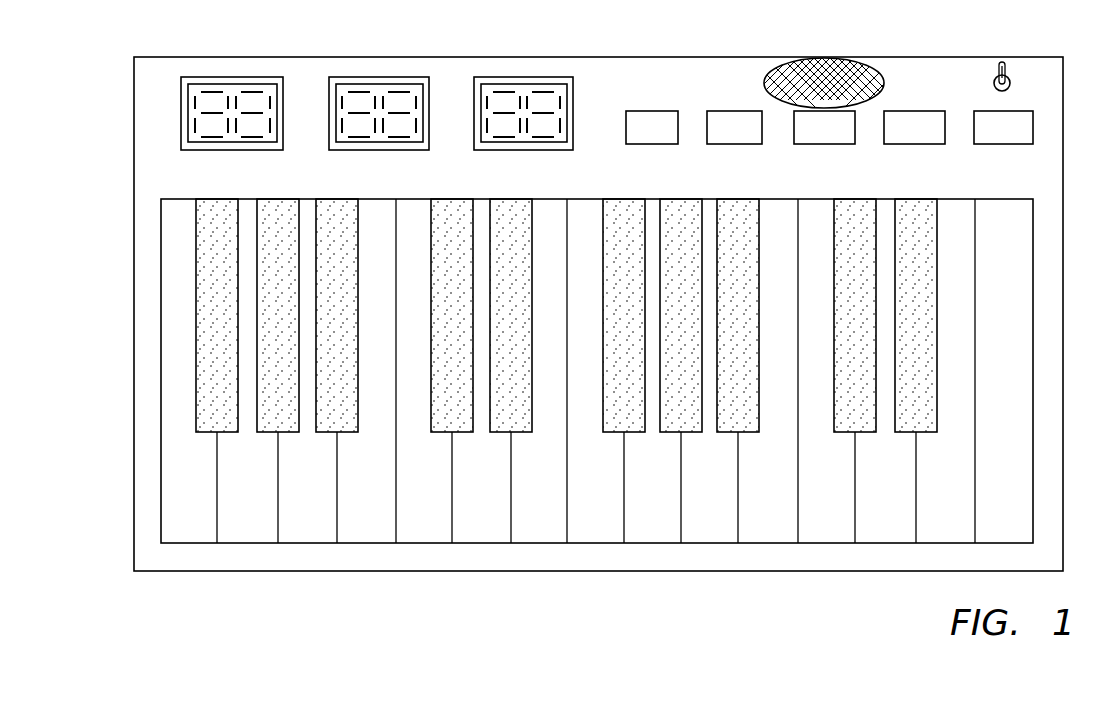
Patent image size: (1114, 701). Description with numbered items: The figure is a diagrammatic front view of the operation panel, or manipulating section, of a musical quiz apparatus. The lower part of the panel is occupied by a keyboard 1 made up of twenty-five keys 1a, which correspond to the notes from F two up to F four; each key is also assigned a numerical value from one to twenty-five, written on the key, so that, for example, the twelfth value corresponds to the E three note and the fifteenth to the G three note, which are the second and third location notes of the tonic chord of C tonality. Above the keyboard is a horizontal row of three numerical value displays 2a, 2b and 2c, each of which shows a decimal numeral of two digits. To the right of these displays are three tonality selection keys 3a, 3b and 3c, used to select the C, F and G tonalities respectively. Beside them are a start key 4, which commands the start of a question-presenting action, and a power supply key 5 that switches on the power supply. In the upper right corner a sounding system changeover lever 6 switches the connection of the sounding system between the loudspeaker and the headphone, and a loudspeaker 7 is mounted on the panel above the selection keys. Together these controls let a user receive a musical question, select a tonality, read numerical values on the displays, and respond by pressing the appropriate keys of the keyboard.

The keyboard 1 is at (1009, 403).
The keys 1a is at (215, 335).
The numerical value display 2a is at (217, 91).
The numerical value display 2b is at (364, 91).
The numerical value display 2c is at (503, 91).
The tonality selection key 3a is at (651, 144).
The tonality selection key 3b is at (732, 144).
The tonality selection key 3c is at (815, 144).
The start key 4 is at (901, 144).
The power supply key 5 is at (989, 144).
The sounding system changeover lever 6 is at (1003, 68).
The loudspeaker 7 is at (823, 70).